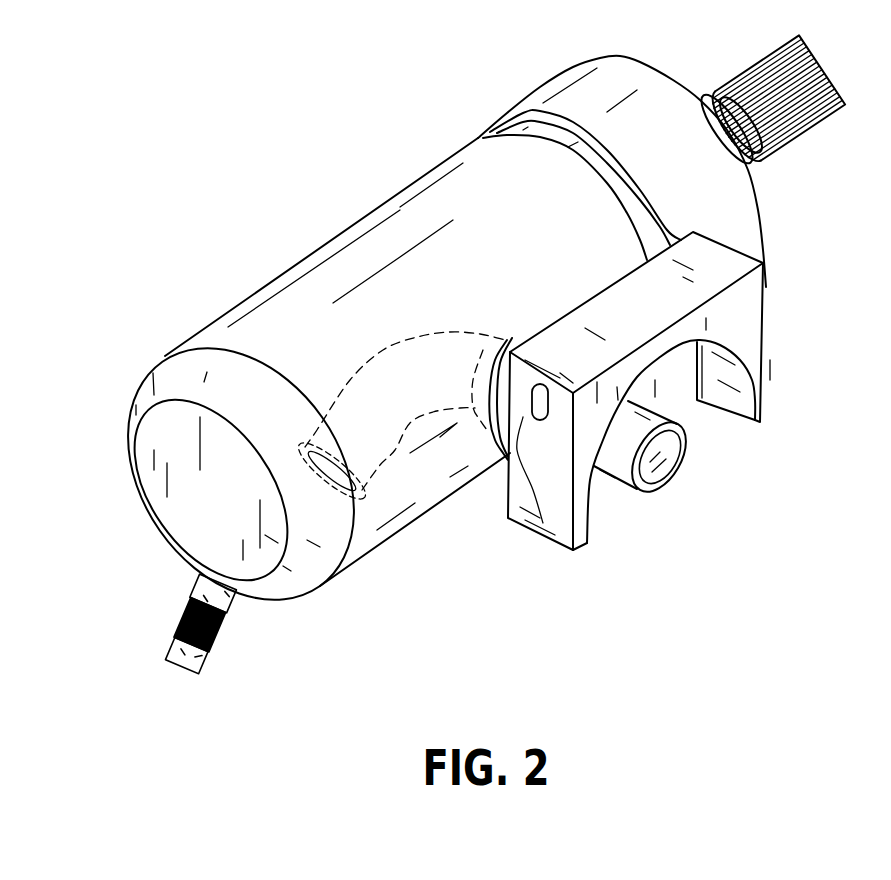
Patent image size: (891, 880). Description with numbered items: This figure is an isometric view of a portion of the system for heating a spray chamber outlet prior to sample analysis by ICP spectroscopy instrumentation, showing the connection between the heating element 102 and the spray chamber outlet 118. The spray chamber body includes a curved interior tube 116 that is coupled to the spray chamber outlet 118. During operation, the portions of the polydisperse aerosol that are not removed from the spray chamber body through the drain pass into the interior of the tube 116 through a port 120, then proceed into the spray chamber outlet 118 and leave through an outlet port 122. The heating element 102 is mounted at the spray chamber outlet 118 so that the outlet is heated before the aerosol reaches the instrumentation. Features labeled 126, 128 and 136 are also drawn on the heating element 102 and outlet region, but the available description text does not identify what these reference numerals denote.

The heating element 102 is at (752, 288).
The curved interior tube 116 is at (388, 458).
The spray chamber outlet 118 is at (620, 445).
The port 120 is at (345, 493).
The outlet port 122 is at (670, 457).
The arcuate seat surface of bracket 126 is at (680, 413).
The slot 128 is at (543, 537).
The outlet bore 136 is at (666, 458).